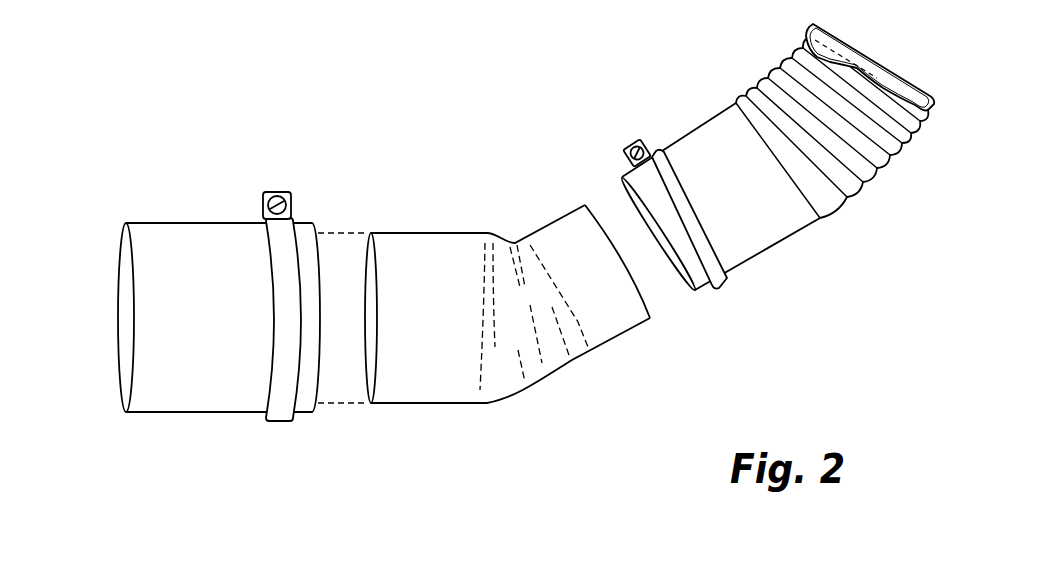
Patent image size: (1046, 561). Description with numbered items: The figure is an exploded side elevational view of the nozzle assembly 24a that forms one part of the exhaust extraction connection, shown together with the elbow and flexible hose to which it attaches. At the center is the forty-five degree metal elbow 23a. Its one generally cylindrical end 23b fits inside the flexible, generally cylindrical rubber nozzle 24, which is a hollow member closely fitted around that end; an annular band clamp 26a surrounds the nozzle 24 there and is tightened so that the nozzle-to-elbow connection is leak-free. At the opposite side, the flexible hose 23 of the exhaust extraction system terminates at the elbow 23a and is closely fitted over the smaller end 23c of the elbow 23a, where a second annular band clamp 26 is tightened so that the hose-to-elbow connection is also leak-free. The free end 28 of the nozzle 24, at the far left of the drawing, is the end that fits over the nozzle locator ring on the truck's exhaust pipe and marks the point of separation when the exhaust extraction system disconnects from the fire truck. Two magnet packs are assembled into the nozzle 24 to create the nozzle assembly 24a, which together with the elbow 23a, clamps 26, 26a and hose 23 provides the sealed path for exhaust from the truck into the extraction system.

The flexible hose 23 is at (808, 153).
The metal elbow 23a is at (587, 323).
The cylindrical end 23b is at (367, 268).
The smaller end 23c is at (586, 206).
The rubber nozzle 24 is at (217, 257).
The nozzle assembly 24a is at (136, 196).
The annular band clamp 26 is at (711, 253).
The annular band clamp 26a is at (283, 256).
The free end 28 is at (118, 357).